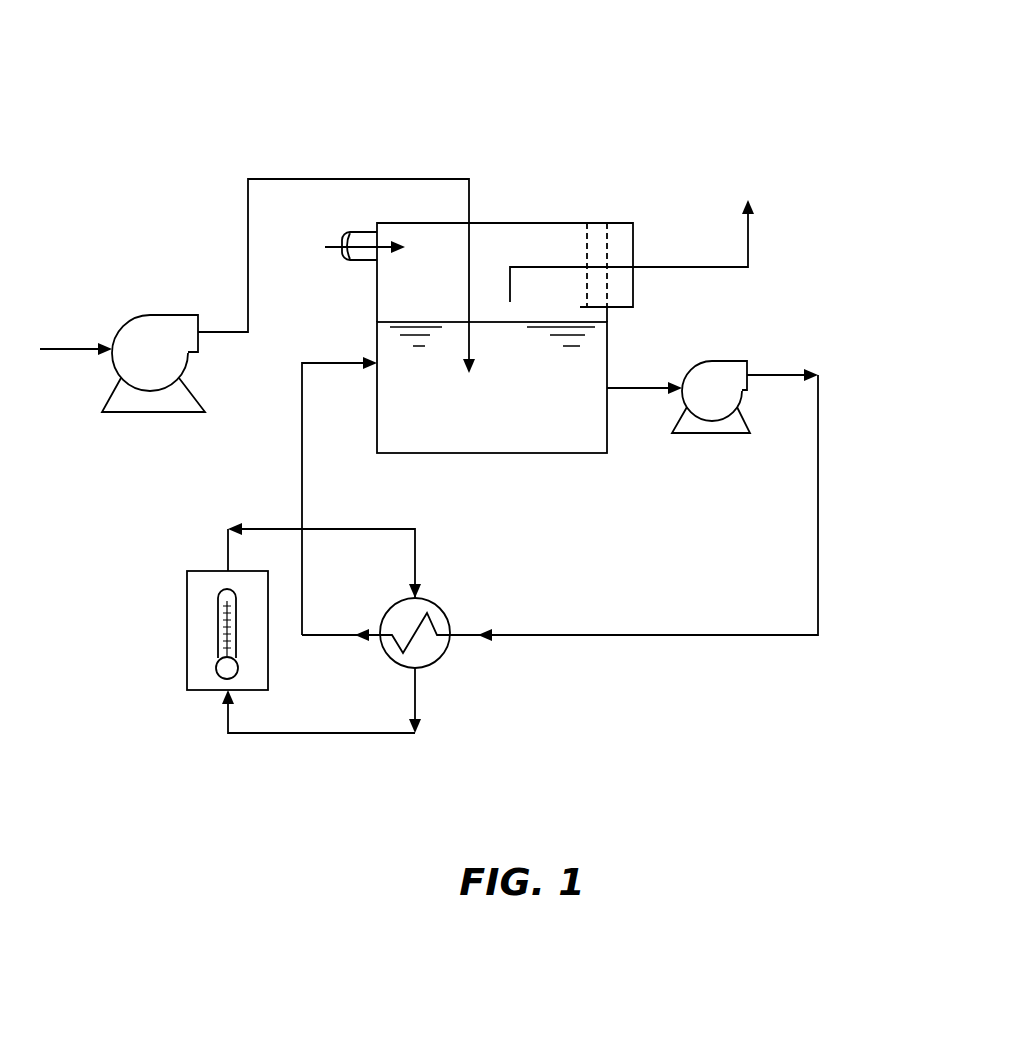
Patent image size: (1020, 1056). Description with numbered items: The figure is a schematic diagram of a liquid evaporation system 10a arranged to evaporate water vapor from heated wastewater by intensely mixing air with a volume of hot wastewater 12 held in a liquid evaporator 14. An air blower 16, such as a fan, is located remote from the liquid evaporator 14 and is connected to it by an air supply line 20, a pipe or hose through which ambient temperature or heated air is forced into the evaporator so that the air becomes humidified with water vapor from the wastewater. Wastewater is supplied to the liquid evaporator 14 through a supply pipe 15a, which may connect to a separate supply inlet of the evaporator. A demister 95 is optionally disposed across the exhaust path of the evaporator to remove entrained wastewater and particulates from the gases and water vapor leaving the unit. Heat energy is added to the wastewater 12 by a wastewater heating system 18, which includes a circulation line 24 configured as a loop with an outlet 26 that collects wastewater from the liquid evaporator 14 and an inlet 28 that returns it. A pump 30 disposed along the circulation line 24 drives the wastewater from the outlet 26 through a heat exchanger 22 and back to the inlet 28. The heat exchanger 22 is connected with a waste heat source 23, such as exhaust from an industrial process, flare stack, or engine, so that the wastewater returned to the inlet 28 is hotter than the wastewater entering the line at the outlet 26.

The liquid evaporation system 10a is at (160, 74).
The volume of hot wastewater 12 is at (545, 442).
The liquid evaporator 14 is at (537, 223).
The supply pipe 15a is at (357, 232).
The air blower 16 is at (150, 315).
The wastewater heating system 18 is at (840, 569).
The air supply line 20 is at (295, 178).
The heat exchanger 22 is at (440, 658).
The waste heat source 23 is at (186, 657).
The circulation line 24 is at (723, 637).
The outlet 26 is at (612, 386).
The inlet 28 is at (373, 358).
The pump 30 is at (730, 360).
The demister 95 is at (607, 243).